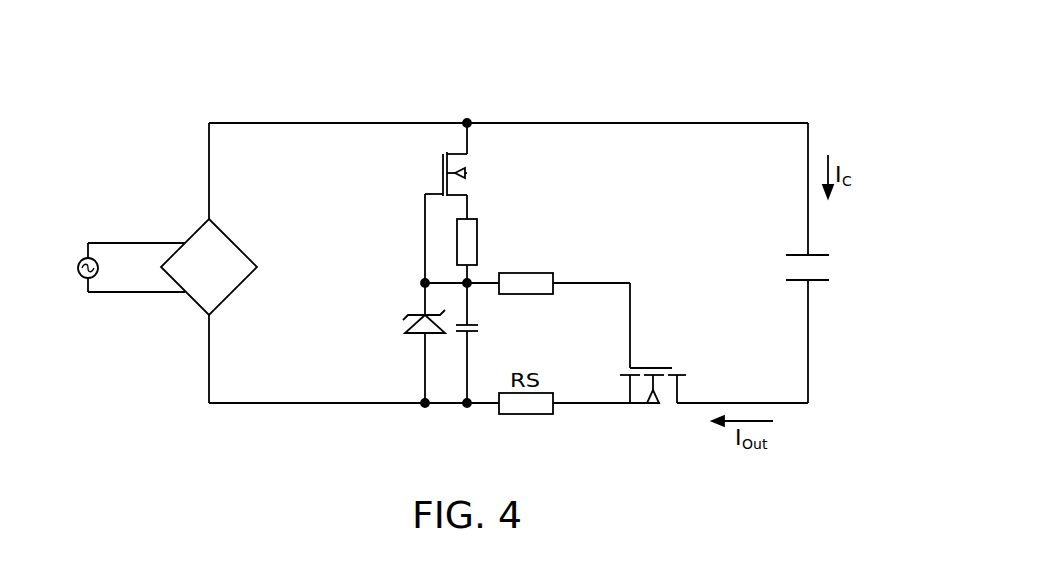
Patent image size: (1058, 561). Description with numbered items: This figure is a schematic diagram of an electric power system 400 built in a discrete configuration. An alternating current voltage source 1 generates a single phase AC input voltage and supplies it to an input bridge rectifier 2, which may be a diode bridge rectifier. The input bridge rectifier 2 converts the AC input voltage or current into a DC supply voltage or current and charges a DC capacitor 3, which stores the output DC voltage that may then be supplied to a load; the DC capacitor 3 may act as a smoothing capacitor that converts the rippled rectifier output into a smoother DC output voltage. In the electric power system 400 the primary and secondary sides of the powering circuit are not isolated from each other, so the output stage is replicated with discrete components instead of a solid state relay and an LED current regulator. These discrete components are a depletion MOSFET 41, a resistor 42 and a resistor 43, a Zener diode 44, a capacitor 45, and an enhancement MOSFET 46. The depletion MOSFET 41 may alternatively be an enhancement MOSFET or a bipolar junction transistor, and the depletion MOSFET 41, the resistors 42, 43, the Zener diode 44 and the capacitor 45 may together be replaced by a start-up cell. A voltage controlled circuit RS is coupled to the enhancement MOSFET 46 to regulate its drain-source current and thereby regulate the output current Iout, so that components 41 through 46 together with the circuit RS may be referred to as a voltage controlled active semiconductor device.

The alternating current (AC) voltage source 1 is at (82, 256).
The input bridge rectifier 2 is at (187, 243).
The direct current (DC) capacitor 3 is at (799, 283).
The depletion MOSFET 41 is at (441, 165).
The resistor 42 is at (478, 240).
The resistor 43 is at (524, 296).
The Zener diode 44 is at (403, 326).
The capacitor 45 is at (479, 335).
The enhancement MOSFET 46 is at (653, 367).
The electric power system 400 is at (738, 60).